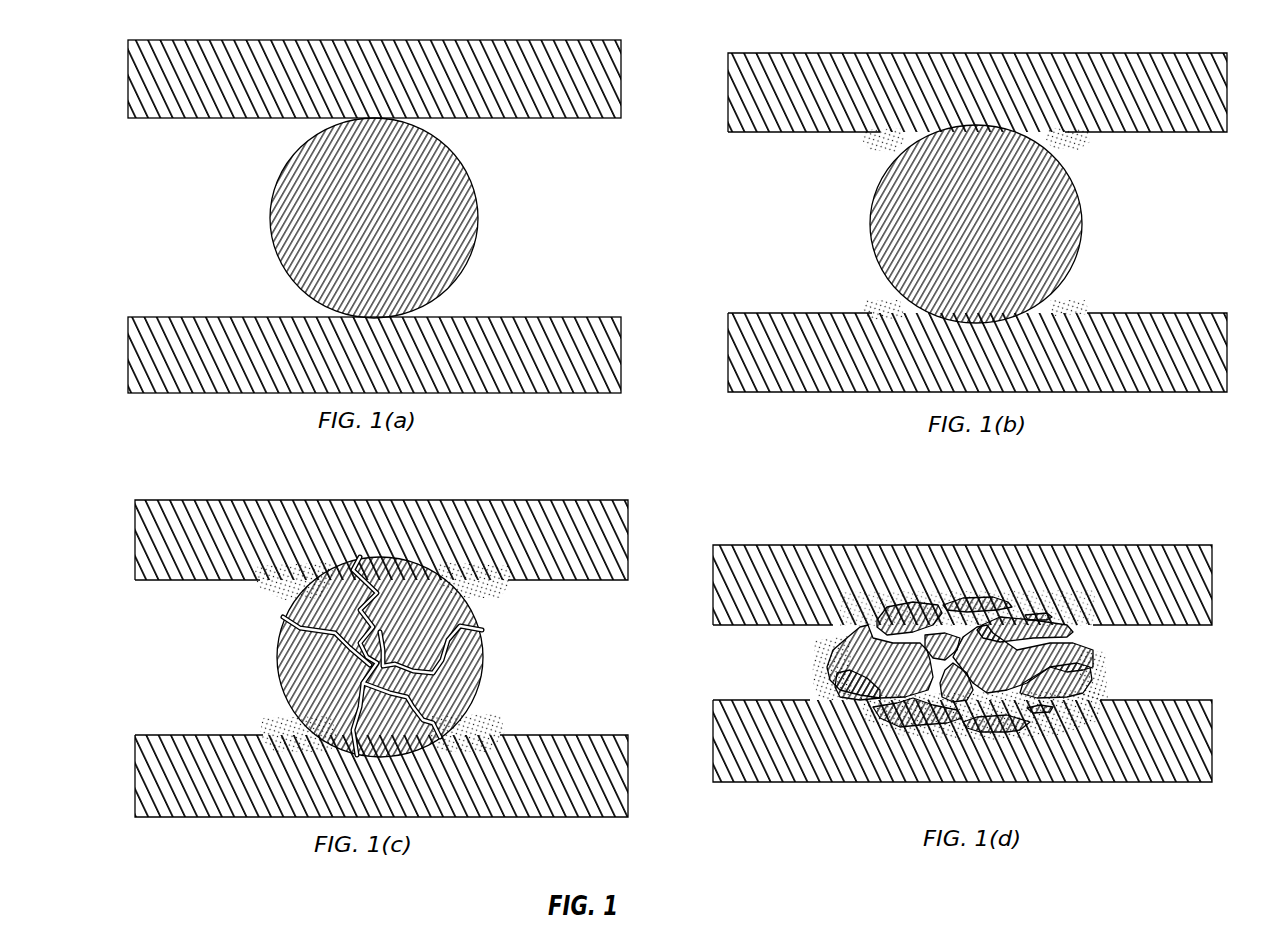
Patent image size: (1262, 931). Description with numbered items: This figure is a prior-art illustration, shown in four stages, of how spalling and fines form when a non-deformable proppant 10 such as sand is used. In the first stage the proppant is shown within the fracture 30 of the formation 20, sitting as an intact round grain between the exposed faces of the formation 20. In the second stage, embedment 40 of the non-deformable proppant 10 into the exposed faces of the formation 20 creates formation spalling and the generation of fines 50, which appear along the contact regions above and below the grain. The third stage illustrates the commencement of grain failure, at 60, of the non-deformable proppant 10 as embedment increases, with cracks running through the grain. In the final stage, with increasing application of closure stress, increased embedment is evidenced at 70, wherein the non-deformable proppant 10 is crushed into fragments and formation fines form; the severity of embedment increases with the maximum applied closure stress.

The non-deformable proppant 10 is at (281, 262).
The formation 20 is at (186, 120).
The fracture 30 is at (197, 198).
The embedment 40 is at (983, 113).
The fines 50 is at (1081, 300).
The grain failure 60 is at (447, 653).
The increased embedment 70 is at (922, 593).